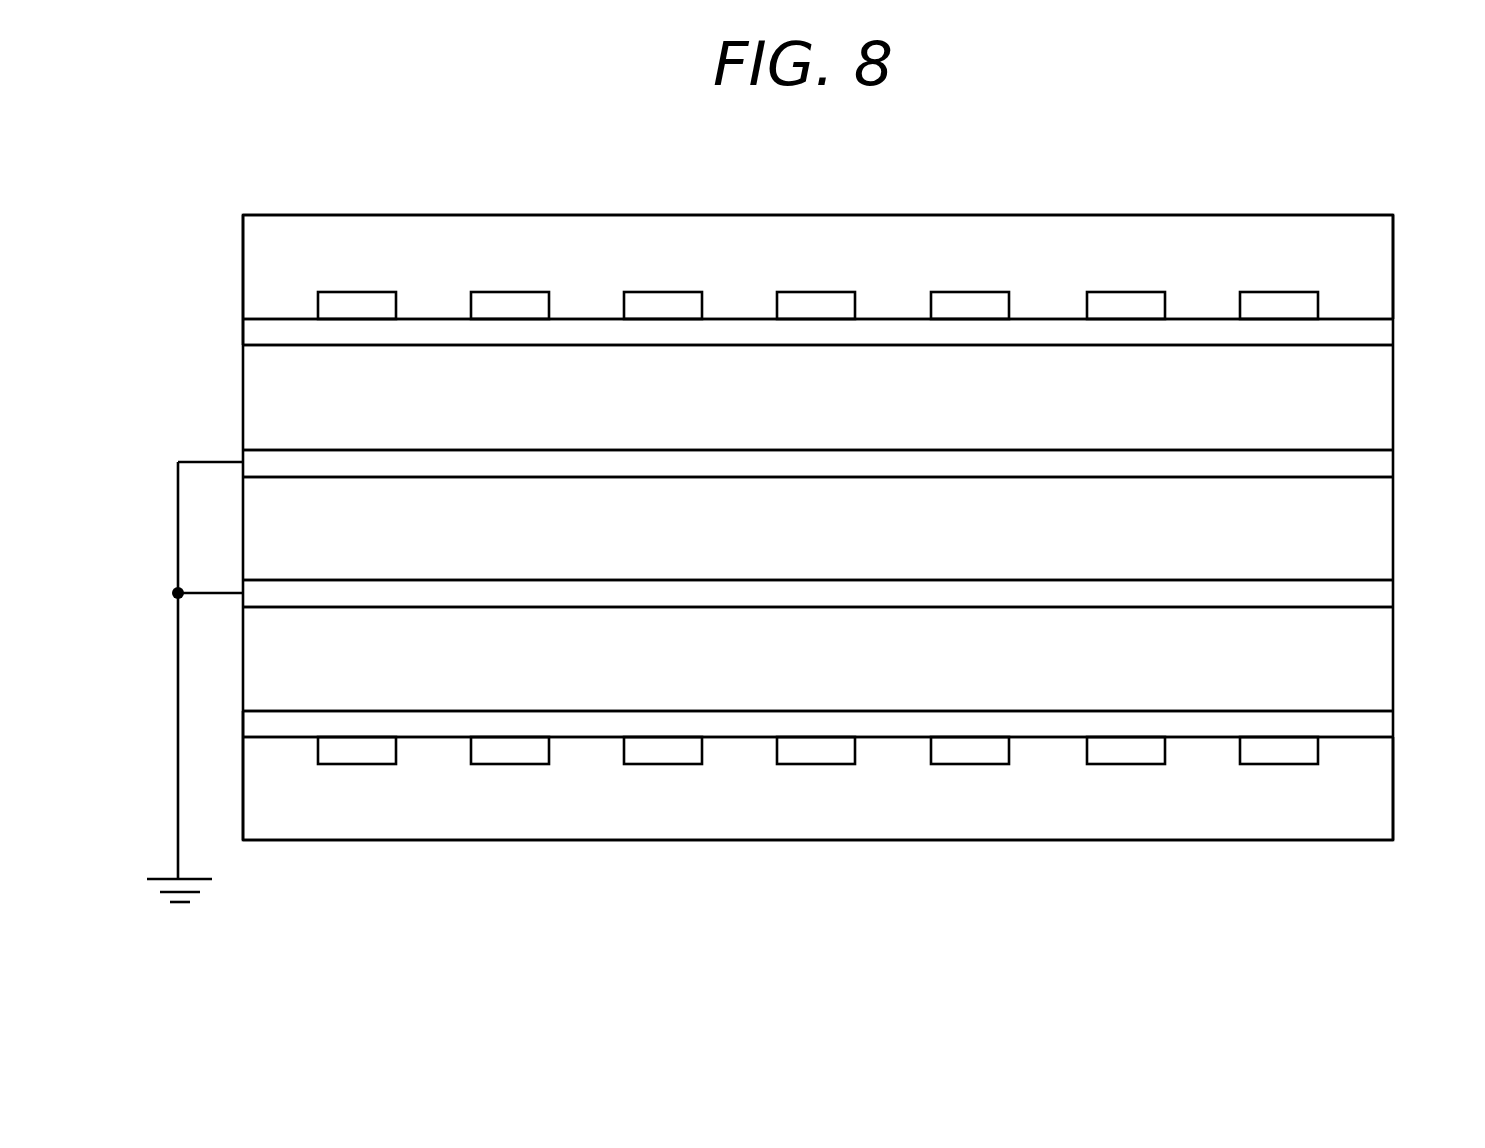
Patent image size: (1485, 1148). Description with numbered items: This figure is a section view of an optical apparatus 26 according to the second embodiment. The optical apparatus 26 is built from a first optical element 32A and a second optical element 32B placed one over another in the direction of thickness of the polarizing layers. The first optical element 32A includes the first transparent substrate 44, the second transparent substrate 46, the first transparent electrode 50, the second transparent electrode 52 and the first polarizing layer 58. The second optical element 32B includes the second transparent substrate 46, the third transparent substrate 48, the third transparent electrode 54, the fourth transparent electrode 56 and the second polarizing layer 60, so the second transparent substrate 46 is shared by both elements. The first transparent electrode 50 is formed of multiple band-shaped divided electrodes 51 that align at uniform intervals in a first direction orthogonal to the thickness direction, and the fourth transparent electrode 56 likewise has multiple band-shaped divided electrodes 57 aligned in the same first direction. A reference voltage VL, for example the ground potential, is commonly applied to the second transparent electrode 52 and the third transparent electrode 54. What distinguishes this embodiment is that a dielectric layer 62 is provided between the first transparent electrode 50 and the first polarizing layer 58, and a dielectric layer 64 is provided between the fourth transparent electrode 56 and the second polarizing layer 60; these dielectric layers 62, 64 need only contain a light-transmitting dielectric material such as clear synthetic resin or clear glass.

The optical apparatus 26 is at (328, 158).
The first optical element 32A is at (245, 870).
The second optical element 32B is at (222, 240).
The first transparent substrate 44 is at (1377, 791).
The second transparent substrate 46 is at (1377, 523).
The third transparent substrate 48 is at (1377, 271).
The first transparent electrode 50 is at (1141, 782).
The divided electrodes 51 is at (1113, 750).
The second transparent electrode 52 is at (1377, 594).
The third transparent electrode 54 is at (1377, 464).
The fourth transparent electrode 56 is at (1141, 272).
The divided electrodes 57 is at (1112, 300).
The first polarizing layer 58 is at (1377, 656).
The second polarizing layer 60 is at (1377, 393).
The dielectric layer 62 is at (740, 730).
The dielectric layer 64 is at (743, 327).
The reference voltage VL is at (178, 652).